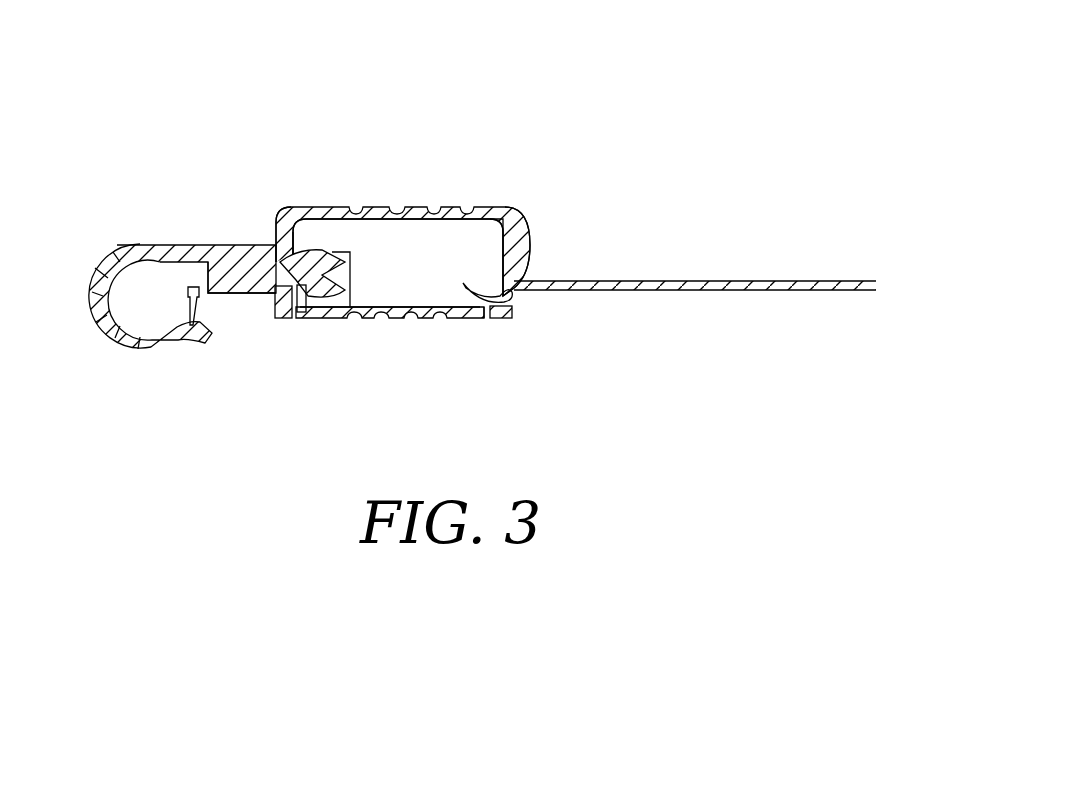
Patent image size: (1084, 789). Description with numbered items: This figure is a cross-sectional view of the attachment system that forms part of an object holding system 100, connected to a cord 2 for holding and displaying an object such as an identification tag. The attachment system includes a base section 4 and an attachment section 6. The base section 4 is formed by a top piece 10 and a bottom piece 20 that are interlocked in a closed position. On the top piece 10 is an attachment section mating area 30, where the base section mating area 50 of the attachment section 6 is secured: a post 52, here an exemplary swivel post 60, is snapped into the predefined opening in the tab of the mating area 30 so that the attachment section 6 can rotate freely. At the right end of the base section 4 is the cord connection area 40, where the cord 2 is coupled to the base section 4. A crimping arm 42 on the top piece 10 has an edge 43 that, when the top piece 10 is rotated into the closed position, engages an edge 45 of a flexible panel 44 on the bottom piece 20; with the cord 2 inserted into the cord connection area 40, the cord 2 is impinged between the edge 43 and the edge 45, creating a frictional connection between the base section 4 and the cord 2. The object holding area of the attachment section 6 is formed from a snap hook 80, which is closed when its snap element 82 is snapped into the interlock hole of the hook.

The object holding system 100 is at (470, 110).
The top piece 10 is at (292, 202).
The attachment section 6 is at (176, 240).
The attachment section mating area 30 is at (274, 236).
The post 52 is at (312, 260).
The base section 4 is at (374, 157).
The crimping arm 42 is at (538, 230).
The cord 2 is at (684, 278).
The flexible panel 44 is at (416, 302).
The edge 43 is at (490, 286).
The cord connection area 40 is at (514, 308).
The edge 45 is at (489, 323).
The bottom piece 20 is at (460, 326).
The base section mating area 50 is at (243, 284).
The swivel post 60 is at (300, 298).
The snap hook 80 is at (123, 353).
The snap element 82 is at (190, 330).